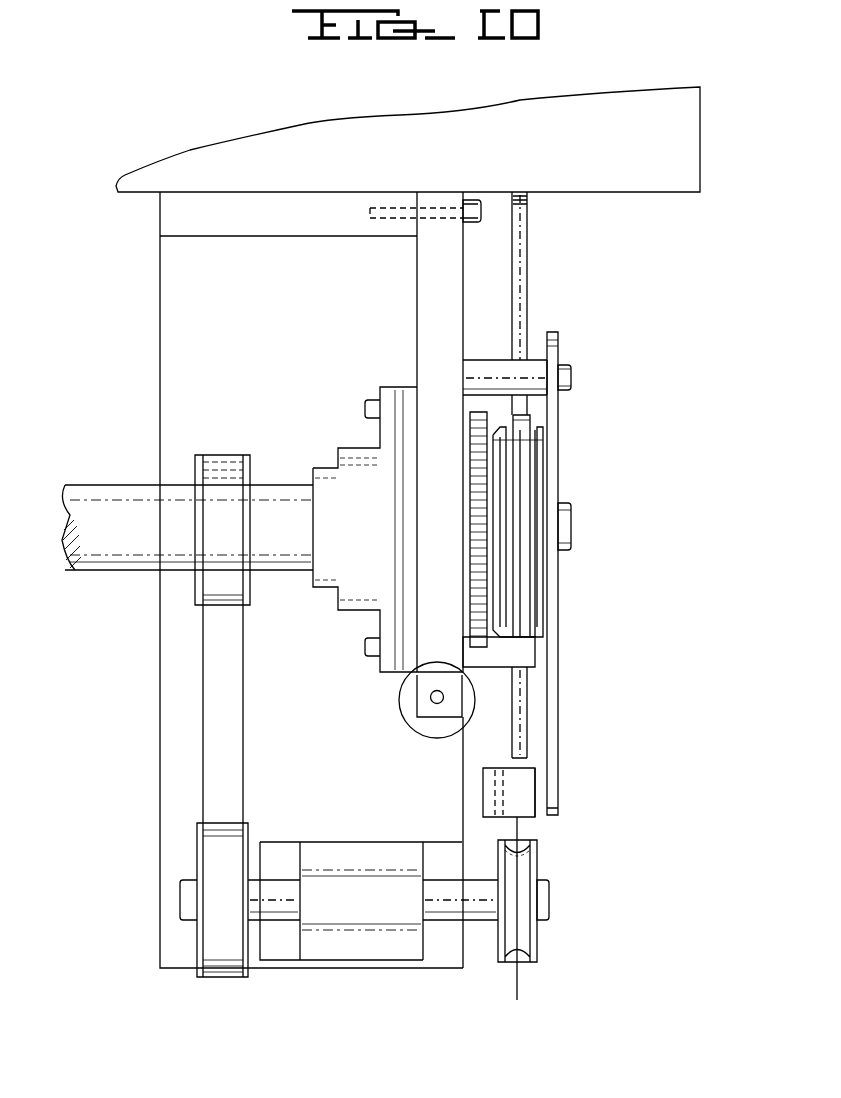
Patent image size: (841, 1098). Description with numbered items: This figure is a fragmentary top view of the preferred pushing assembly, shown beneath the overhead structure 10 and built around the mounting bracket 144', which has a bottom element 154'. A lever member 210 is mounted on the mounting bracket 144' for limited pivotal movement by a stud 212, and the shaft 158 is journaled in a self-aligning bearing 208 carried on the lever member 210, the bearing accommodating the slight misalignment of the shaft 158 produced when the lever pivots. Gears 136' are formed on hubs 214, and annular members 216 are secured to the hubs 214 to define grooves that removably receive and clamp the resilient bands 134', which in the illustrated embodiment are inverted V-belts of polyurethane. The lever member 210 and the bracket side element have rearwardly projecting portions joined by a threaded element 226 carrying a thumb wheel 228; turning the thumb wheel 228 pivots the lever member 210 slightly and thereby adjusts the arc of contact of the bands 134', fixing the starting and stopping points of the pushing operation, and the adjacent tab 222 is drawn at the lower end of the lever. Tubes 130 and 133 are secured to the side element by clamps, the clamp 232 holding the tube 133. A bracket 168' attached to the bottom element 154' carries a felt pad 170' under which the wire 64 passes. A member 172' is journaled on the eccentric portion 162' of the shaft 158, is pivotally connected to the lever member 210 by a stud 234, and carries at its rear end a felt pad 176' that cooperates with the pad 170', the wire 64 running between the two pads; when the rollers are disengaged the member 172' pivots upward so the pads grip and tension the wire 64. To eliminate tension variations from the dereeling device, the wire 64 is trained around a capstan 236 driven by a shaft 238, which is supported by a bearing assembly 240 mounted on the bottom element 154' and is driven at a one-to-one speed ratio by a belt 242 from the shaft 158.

The structure / roof 10 is at (608, 140).
The bottom element 154' is at (268, 580).
The mounting bracket 144' is at (288, 255).
The lever member 210 is at (425, 276).
The stud 212 is at (473, 205).
The tube 130 is at (530, 238).
The stud 234 is at (575, 372).
The member 172' is at (594, 573).
The gears 136' is at (485, 469).
The hubs 214 is at (472, 528).
The resilient bands 134' is at (576, 520).
The annular members 216 is at (533, 468).
The eccentric portion 162' is at (606, 518).
The clamp 232 is at (537, 649).
The tube 133 is at (522, 710).
The bracket 168' is at (463, 788).
The felt pad 170' is at (459, 792).
The felt pad 176' is at (582, 802).
The wire 64 is at (520, 833).
The capstan 236 is at (540, 933).
The shaft 238 is at (475, 905).
The bearing assembly 240 is at (320, 920).
The belt 242 is at (205, 680).
The shaft 158 is at (150, 541).
The self-aligning bearing 208 is at (340, 598).
The tab 222 is at (418, 708).
The threaded element 226 is at (429, 697).
The thumb wheel 228 is at (412, 722).